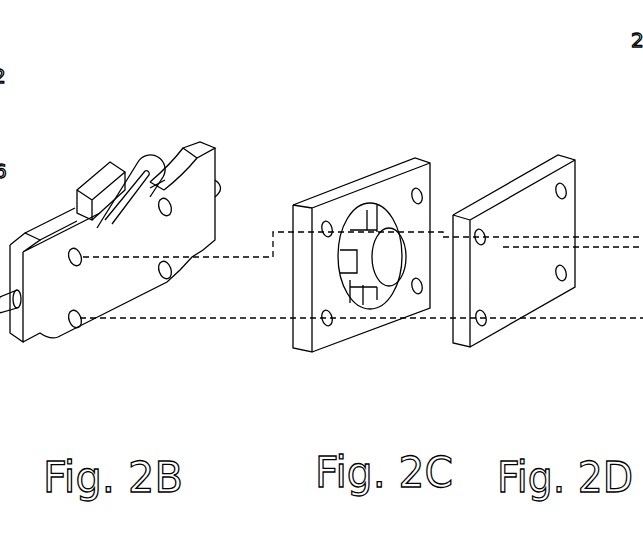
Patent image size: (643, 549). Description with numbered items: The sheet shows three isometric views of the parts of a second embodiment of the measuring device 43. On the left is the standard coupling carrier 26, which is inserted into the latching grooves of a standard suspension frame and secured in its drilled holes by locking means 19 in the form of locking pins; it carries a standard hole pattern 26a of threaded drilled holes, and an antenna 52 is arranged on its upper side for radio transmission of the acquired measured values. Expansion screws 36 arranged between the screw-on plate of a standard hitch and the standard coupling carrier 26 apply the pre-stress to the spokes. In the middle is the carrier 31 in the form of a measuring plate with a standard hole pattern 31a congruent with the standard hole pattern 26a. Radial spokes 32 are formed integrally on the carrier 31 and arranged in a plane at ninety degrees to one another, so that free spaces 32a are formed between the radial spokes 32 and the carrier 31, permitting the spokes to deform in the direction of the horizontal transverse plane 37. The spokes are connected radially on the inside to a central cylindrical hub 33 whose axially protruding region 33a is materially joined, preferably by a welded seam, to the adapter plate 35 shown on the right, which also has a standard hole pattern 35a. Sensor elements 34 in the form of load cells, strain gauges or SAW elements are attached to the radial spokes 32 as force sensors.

In FIG. 2B, the standard coupling carrier 26 is at (112, 142).
In FIG. 2B, the standard hole pattern 26a is at (75, 265).
In FIG. 2B, the antenna 52 is at (162, 183).
In FIG. 2B, the locking means 19 is at (220, 184).
In FIG. 2B, the expansion screws 36 is at (167, 280).
In FIG. 2C, the measuring device 43 is at (420, 87).
In FIG. 2C, the carrier 31 is at (376, 248).
In FIG. 2C, the standard hole pattern 31a is at (327, 218).
In FIG. 2C, the central cylindrical hub 33 is at (411, 202).
In FIG. 2C, the axially protruding region 33a is at (397, 250).
In FIG. 2C, the radial spokes 32 is at (345, 296).
In FIG. 2C, the free spaces 32a is at (386, 230).
In FIG. 2C, the sensor elements 34 is at (355, 306).
In FIG. 2D, the adapter plate 35 is at (532, 253).
In FIG. 2D, the standard hole pattern 35a is at (563, 182).
In FIG. 2D, the horizontal transverse plane 37 is at (642, 230).